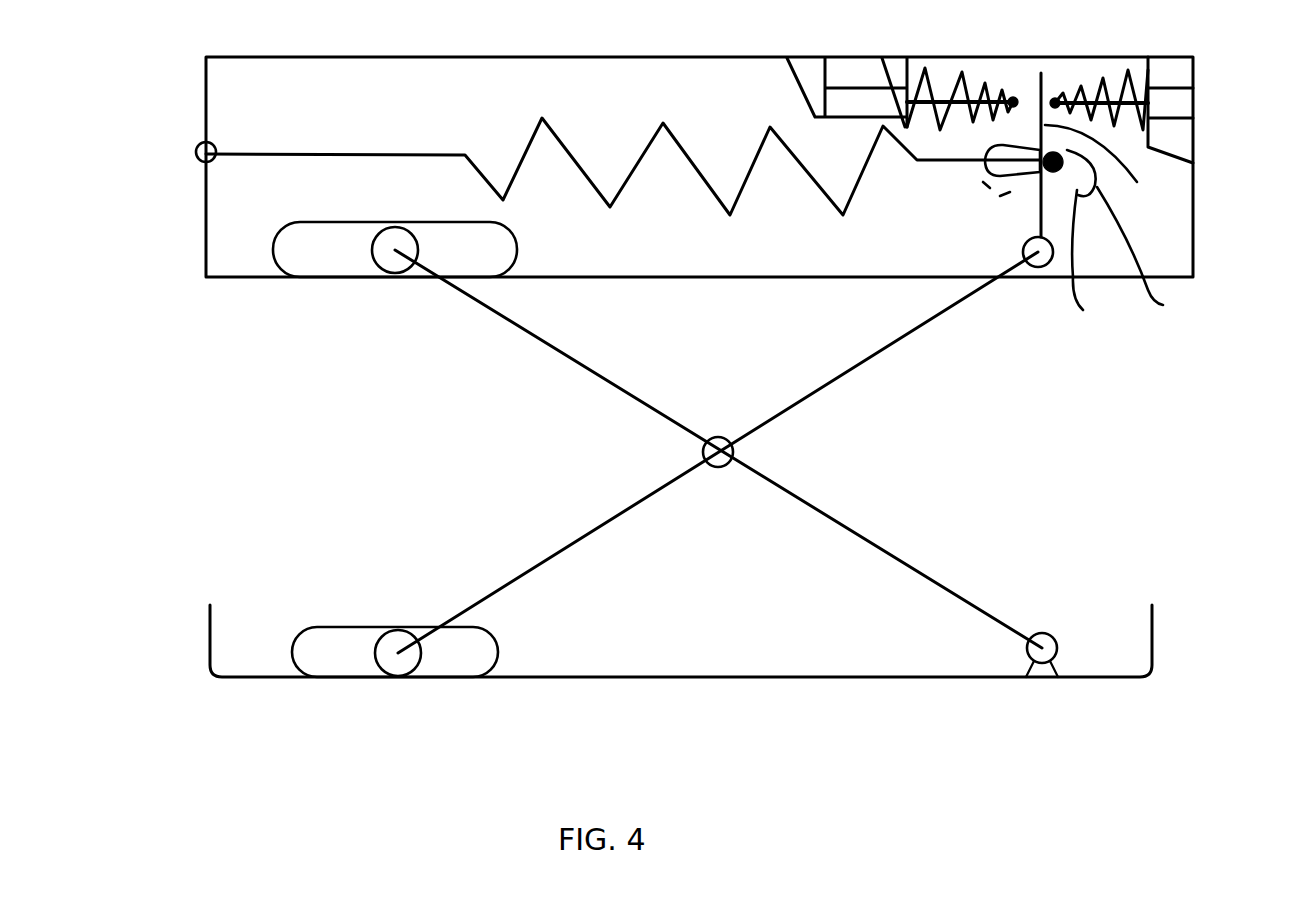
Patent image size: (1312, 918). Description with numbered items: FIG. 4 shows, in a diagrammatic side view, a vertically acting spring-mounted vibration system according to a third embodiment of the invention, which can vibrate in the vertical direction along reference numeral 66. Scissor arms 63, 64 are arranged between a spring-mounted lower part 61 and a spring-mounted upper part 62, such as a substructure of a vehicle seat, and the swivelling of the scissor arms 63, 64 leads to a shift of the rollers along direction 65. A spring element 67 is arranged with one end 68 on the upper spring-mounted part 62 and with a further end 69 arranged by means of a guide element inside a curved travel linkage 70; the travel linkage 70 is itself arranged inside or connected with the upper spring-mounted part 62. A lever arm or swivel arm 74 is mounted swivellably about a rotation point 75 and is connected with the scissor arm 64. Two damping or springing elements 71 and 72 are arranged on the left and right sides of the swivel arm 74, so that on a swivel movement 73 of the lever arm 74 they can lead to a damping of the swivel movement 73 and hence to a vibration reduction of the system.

The spring-mounted lower part 61 is at (850, 678).
The spring-mounted upper part 62 is at (1193, 228).
The scissor arm 63 is at (847, 528).
The scissor arm 64 is at (893, 343).
The direction of roller shift 65 is at (407, 321).
The vertical vibration direction 66 is at (377, 412).
The spring element 67 is at (610, 207).
The end of spring element 68 is at (198, 158).
The further end of spring element 69 is at (1100, 259).
The curved travel linkage 70 is at (1152, 254).
The damping or springing element 71 is at (938, 92).
The damping or springing element 72 is at (1113, 97).
The swivel movement 73 is at (1030, 47).
The lever arm or swivel arm 74 is at (1081, 161).
The rotation point 75 is at (1047, 266).